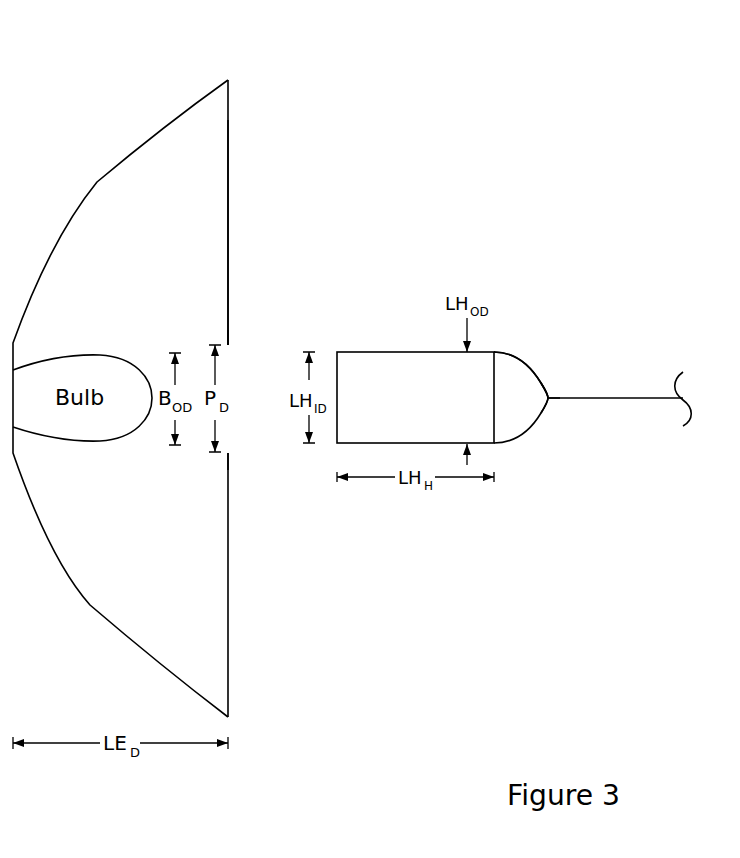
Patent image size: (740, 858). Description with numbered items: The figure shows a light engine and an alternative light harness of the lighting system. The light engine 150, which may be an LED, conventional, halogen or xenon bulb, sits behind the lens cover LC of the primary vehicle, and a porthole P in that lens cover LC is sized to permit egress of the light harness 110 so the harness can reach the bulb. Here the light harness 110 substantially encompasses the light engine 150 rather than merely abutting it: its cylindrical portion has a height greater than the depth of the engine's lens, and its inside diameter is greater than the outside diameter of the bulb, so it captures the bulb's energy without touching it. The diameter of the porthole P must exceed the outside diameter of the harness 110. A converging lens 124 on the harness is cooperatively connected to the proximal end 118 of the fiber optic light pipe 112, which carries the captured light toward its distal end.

The light engine 150 is at (240, 92).
The lens cover LC is at (243, 185).
The porthole P is at (228, 358).
The light harness 110 is at (388, 344).
The converging lens 124 is at (533, 360).
The proximal end 118 is at (556, 390).
The fiber optic light pipe 112 is at (630, 405).